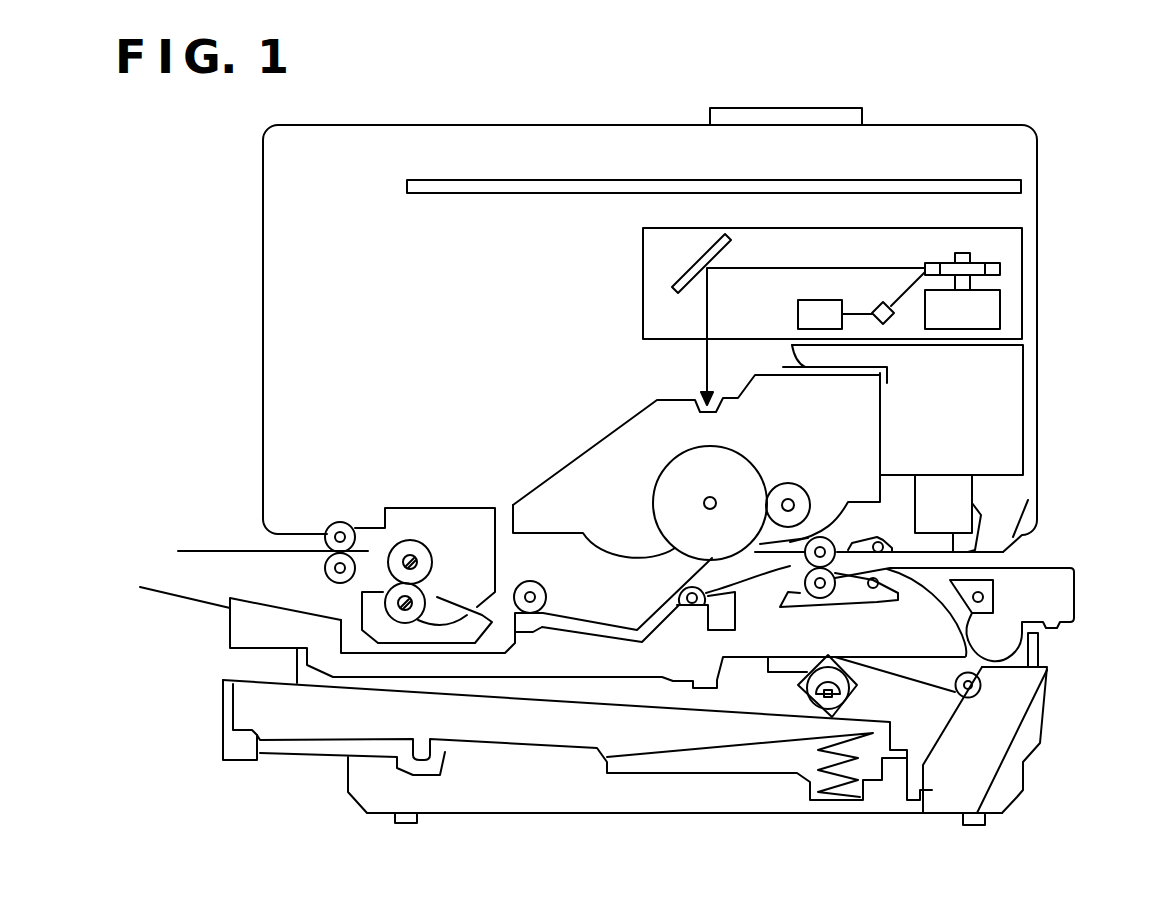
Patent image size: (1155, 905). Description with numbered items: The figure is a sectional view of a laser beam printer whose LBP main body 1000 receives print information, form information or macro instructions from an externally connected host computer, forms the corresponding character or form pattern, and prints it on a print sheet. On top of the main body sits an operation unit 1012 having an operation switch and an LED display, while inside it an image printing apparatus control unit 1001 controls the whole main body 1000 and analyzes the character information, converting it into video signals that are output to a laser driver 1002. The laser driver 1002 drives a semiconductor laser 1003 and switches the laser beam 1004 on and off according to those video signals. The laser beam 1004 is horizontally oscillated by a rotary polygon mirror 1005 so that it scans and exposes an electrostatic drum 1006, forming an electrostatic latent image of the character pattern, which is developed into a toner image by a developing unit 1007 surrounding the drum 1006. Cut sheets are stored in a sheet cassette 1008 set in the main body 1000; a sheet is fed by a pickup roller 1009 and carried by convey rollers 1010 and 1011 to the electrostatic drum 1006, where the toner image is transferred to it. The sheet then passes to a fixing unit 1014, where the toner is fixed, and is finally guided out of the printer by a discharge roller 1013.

The LBP main body 1000 is at (965, 122).
The image printing apparatus control unit 1001 is at (1021, 180).
The laser driver 1002 is at (798, 315).
The semiconductor laser 1003 is at (890, 320).
The laser beam 1004 is at (810, 268).
The rotary polygon mirror 1005 is at (1000, 268).
The electrostatic drum 1006 is at (663, 468).
The developing unit 1007 is at (553, 473).
The sheet cassette 1008 is at (220, 728).
The pickup roller 1009 is at (812, 693).
The convey roller 1010 is at (955, 698).
The convey roller 1011 is at (835, 600).
The operation unit 1012 is at (830, 106).
The discharge roller 1013 is at (340, 522).
The fixing unit 1014 is at (415, 540).